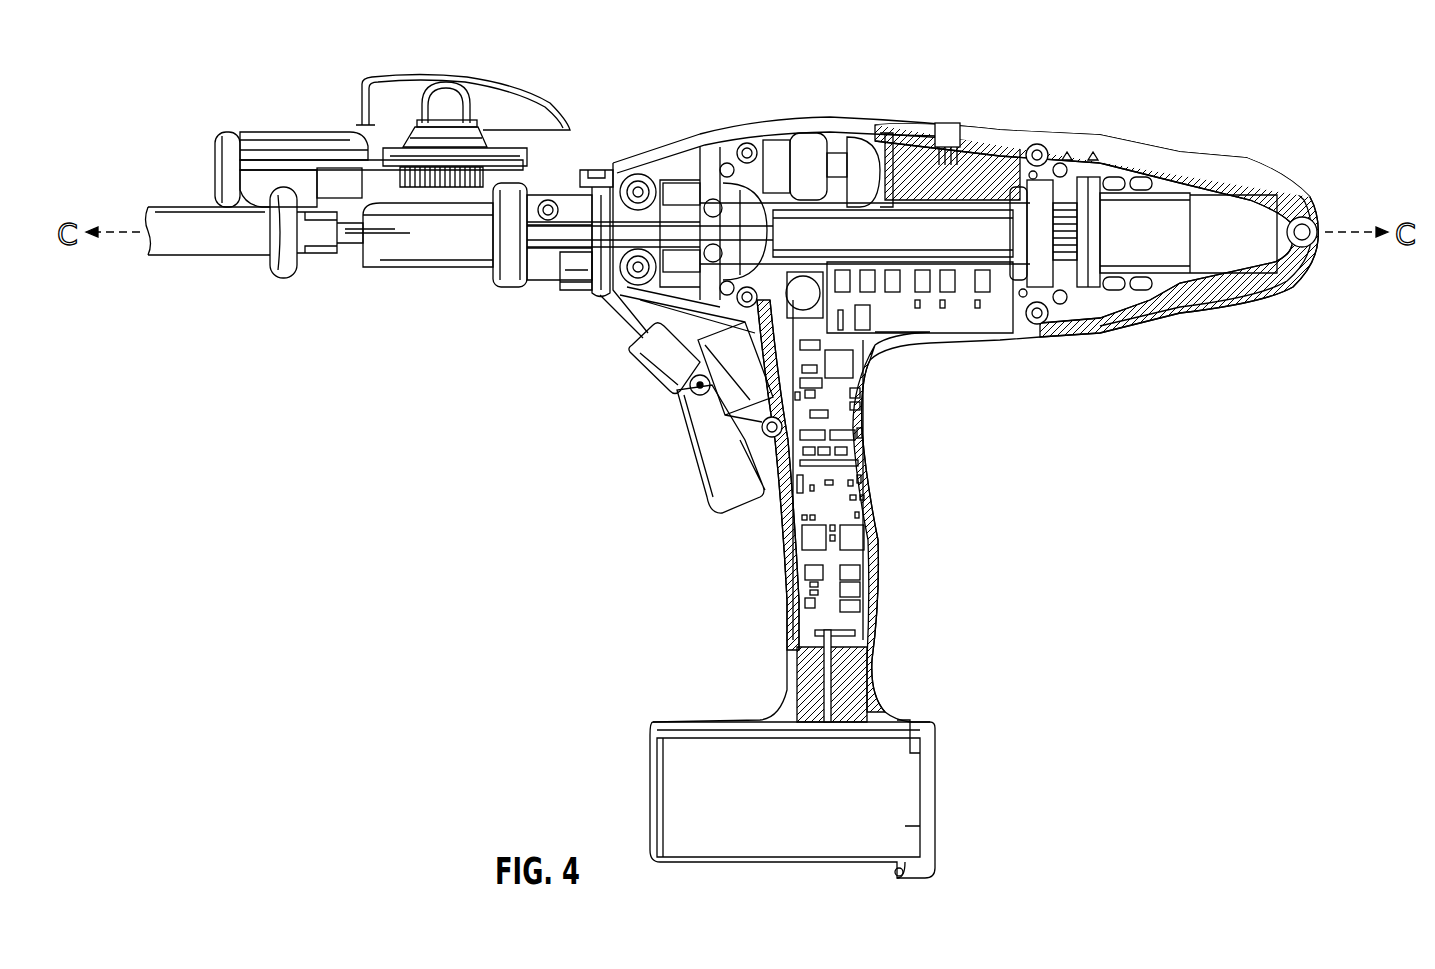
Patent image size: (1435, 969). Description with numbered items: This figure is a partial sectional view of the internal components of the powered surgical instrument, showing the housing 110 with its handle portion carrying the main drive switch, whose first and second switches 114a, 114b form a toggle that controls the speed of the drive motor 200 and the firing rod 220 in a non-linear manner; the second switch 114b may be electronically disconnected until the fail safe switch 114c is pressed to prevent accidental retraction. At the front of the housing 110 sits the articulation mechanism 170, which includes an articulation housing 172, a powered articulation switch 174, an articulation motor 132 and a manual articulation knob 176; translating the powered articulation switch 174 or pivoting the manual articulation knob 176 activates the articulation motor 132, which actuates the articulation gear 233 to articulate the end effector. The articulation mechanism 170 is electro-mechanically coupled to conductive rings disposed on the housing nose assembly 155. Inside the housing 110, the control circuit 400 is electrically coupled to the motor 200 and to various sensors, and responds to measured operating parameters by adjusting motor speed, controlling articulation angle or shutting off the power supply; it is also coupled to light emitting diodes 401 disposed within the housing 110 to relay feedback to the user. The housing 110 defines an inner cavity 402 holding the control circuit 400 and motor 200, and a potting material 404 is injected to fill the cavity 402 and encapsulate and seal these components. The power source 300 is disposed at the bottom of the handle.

The housing 110 is at (959, 404).
The first switch 114a is at (697, 480).
The second switch 114b is at (643, 372).
The fail safe switch 114c is at (820, 302).
The articulation motor 132 is at (282, 128).
The housing nose assembly 155 is at (585, 168).
The articulation mechanism 170 is at (364, 52).
The articulation housing 172 is at (395, 142).
The powered articulation switch 174 is at (870, 158).
The manual articulation knob 176 is at (460, 78).
The drive motor 200 is at (1247, 208).
The firing rod 220 is at (577, 288).
The articulation gear 233 is at (463, 235).
The power source 300 is at (906, 786).
The control circuit 400 is at (873, 385).
The light emitting diodes 401 is at (1093, 152).
The inner cavity 402 is at (872, 666).
The potting material 404 is at (1196, 306).